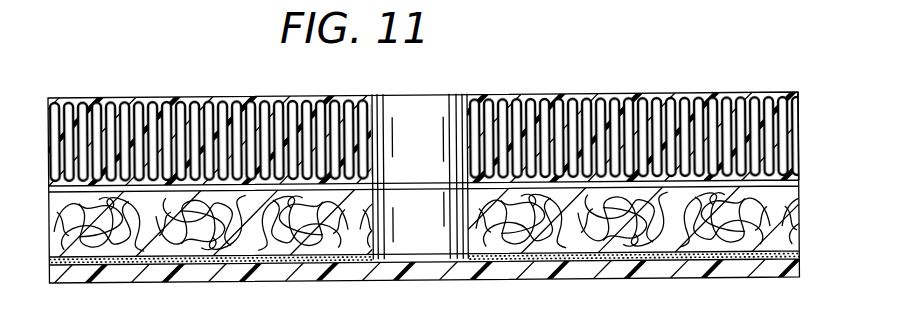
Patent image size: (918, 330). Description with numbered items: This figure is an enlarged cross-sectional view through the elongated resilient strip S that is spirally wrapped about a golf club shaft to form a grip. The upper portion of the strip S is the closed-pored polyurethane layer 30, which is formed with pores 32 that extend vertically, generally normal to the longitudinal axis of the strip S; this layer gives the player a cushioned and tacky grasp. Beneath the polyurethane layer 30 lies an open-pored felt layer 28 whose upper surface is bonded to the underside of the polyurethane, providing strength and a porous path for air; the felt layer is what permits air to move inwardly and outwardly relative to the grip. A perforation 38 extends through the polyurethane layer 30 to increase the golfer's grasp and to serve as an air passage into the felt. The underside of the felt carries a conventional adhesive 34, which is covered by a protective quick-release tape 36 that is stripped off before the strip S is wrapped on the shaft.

The fibrous batt layer 28 is at (781, 203).
The polyurethane layer 30 is at (779, 137).
The pores 32 is at (742, 108).
The adhesive 34 is at (787, 254).
The protective quick-release tape 36 is at (762, 268).
The perforations 38 is at (442, 112).
The elongated resilient strip S is at (800, 178).